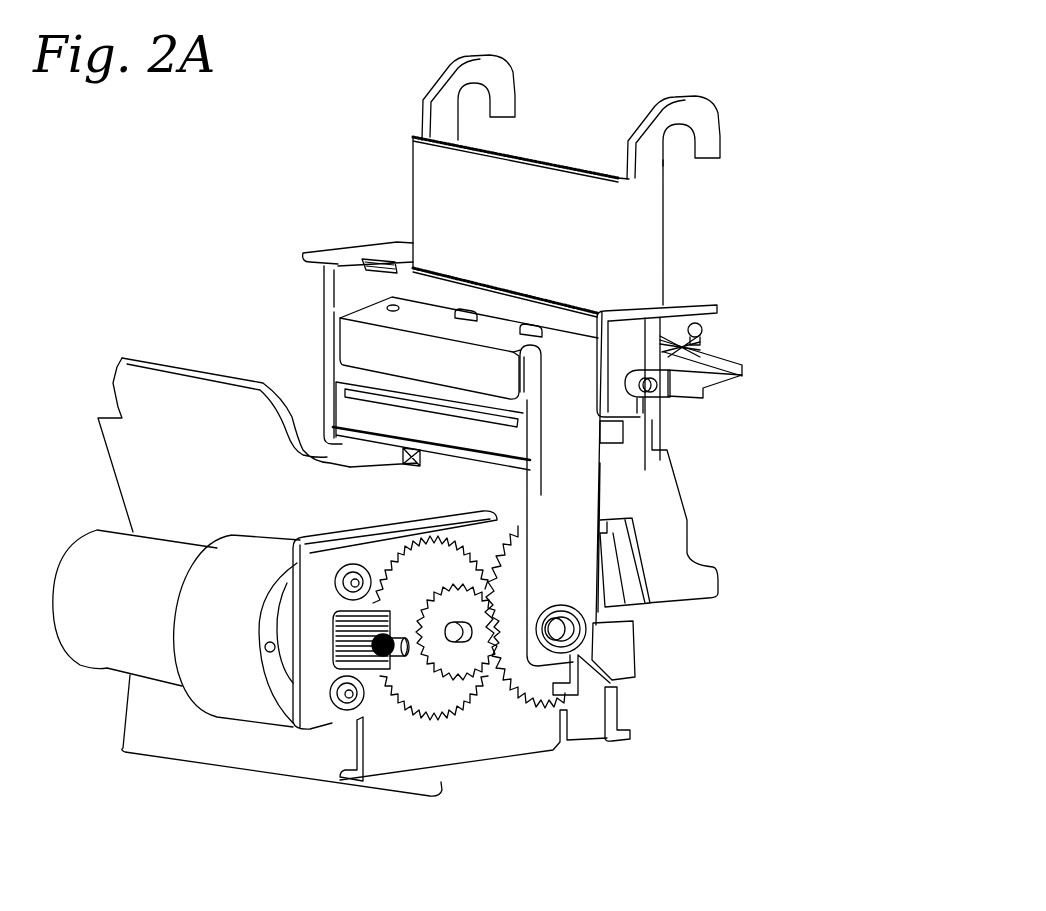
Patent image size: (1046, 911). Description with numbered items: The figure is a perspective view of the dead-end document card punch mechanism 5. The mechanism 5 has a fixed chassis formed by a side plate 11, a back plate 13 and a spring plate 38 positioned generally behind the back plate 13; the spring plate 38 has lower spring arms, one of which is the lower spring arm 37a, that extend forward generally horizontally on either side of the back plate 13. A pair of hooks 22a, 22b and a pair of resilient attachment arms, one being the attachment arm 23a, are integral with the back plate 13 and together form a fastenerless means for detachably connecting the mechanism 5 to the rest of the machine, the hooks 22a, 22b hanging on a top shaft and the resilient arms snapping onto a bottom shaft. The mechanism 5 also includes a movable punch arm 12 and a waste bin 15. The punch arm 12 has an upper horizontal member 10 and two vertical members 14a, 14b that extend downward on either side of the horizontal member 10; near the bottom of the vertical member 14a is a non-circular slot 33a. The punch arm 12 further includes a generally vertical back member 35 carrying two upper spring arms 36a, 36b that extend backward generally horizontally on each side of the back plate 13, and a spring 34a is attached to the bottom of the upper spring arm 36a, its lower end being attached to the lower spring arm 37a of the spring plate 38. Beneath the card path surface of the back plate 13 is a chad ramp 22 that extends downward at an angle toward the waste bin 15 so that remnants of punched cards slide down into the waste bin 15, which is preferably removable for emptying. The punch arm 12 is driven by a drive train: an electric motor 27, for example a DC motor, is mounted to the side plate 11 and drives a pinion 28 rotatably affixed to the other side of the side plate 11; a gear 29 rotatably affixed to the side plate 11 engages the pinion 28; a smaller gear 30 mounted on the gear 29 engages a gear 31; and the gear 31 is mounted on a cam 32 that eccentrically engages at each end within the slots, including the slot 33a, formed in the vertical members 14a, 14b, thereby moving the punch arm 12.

The mechanism 5 is at (815, 187).
The horizontal member 10 is at (372, 305).
The side plate 11 is at (375, 770).
The punch arm 12 is at (306, 349).
The back plate 13 is at (648, 245).
The vertical member 14a is at (588, 492).
The vertical member 14b is at (328, 327).
The waste bin 15 is at (135, 455).
The chad ramp 22 is at (403, 450).
The hook 22a is at (692, 107).
The hook 22b is at (480, 65).
The resilient attachment arm 23a is at (710, 573).
The electric motor 27 is at (212, 688).
The pinion 28 is at (375, 638).
The gear 29 is at (420, 702).
The smaller gear 30 is at (458, 660).
The gear 31 is at (542, 693).
The cam 32 is at (562, 633).
The non-circular slot 33a is at (593, 625).
The spring 34a is at (700, 352).
The back member 35 is at (583, 322).
The upper spring arm 36a is at (685, 318).
The upper spring arm 36b is at (362, 250).
The lower spring arm 37a is at (728, 373).
The spring plate 38 is at (683, 337).